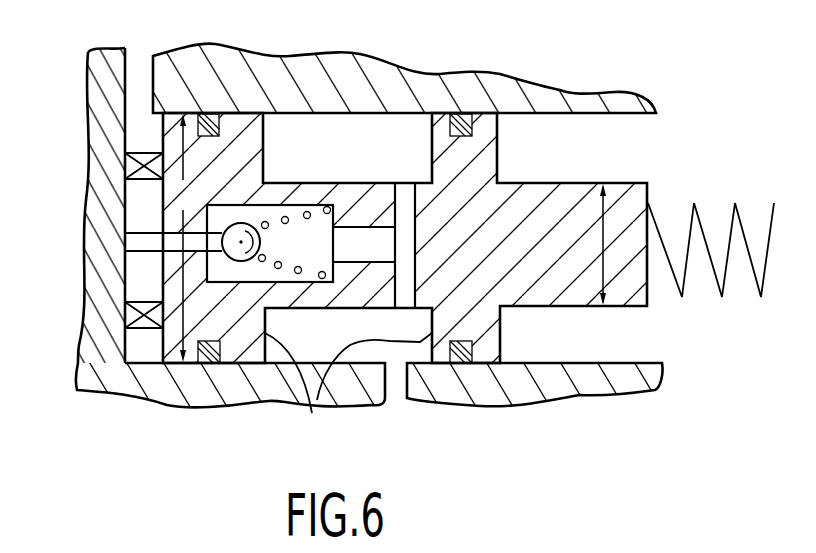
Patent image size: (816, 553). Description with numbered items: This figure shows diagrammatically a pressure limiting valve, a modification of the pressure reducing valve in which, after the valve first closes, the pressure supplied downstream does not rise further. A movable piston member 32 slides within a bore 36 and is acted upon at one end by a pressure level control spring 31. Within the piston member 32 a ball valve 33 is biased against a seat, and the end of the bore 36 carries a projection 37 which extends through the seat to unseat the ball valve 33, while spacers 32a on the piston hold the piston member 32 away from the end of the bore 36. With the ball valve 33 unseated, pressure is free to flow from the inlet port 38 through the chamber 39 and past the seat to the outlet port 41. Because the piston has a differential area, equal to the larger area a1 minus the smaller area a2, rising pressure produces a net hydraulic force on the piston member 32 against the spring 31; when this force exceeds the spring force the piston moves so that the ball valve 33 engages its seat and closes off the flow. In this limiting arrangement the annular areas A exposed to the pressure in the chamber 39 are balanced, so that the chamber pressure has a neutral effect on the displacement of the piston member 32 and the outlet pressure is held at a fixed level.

The pressure level control spring 31 is at (724, 269).
The piston member 32 is at (522, 279).
The spacers 32a is at (130, 163).
The ball valve 33 is at (241, 247).
The bore 36 is at (118, 351).
The projection 37 is at (137, 242).
The inlet port 38 is at (400, 385).
The chamber 39 is at (329, 140).
The outlet port 41 is at (137, 72).
The annular areas A is at (348, 390).
The larger area a1 is at (188, 238).
The smaller area a2 is at (588, 244).